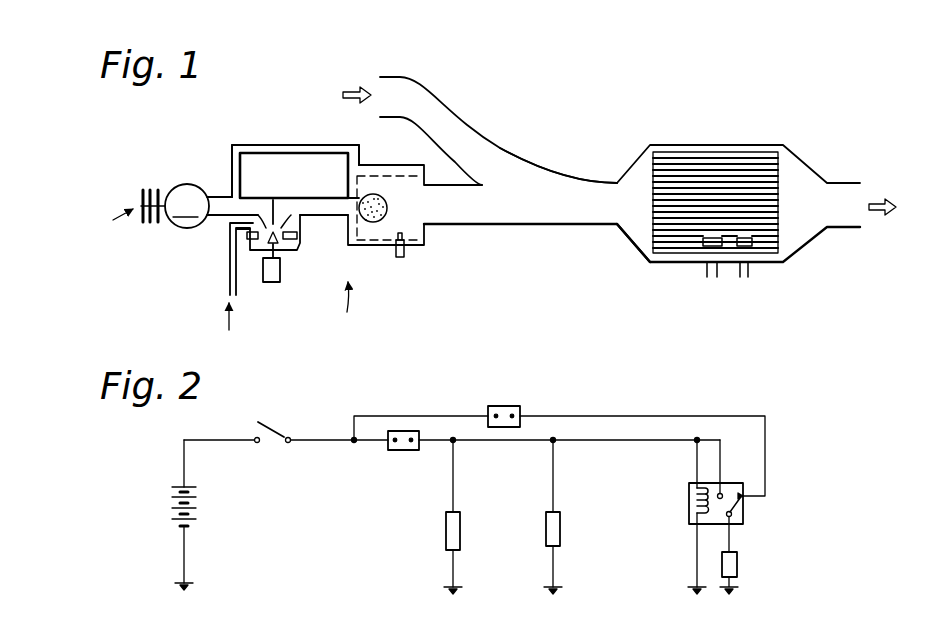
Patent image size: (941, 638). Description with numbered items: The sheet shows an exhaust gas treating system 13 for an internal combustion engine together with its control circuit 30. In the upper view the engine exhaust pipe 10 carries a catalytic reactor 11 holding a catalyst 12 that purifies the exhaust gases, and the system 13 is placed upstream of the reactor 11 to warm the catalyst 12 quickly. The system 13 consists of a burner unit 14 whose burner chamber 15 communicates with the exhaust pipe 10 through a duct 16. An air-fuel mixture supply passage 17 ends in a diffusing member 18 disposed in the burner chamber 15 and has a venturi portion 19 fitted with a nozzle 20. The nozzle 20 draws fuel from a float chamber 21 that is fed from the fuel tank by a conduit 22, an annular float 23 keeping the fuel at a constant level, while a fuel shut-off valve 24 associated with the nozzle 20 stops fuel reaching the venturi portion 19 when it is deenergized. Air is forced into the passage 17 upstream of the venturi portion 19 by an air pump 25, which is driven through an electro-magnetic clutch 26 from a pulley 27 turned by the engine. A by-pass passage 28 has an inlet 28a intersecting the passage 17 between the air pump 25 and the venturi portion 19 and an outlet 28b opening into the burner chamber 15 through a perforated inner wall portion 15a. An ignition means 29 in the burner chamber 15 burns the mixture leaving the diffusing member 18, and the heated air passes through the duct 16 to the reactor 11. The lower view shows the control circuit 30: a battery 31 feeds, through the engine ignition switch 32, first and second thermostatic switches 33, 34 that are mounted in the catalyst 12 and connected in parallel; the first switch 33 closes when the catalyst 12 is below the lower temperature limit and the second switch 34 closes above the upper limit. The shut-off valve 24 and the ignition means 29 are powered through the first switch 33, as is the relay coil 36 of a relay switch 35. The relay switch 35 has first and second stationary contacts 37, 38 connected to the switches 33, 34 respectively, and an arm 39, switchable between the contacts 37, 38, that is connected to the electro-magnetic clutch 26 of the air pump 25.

In FIG. 1, the exhaust pipe 10 is at (437, 110).
In FIG. 1, the catalytic reactor 11 is at (685, 142).
In FIG. 1, the catalyst 12 is at (750, 158).
In FIG. 1, the exhaust gas treating system 13 is at (528, 150).
In FIG. 1, the burner unit 14 is at (355, 338).
In FIG. 1, the burner chamber 15 is at (427, 240).
In FIG. 1, the perforated inner wall portion 15a is at (366, 247).
In FIG. 1, the duct 16 is at (451, 179).
In FIG. 1, the air-fuel mixture supply passage 17 is at (327, 199).
In FIG. 1, the diffusing member 18 is at (390, 204).
In FIG. 1, the venturi portion 19 is at (275, 198).
In FIG. 1, the nozzle 20 is at (298, 226).
In FIG. 1, the float chamber 21 is at (298, 251).
In FIG. 1, the conduit 22 is at (227, 268).
In FIG. 1, the annular float 23 is at (253, 244).
In FIG. 1, the fuel shut-off valve 24 is at (276, 283).
In FIG. 2, the fuel shut-off valve 24 is at (445, 530).
In FIG. 1, the air pump 25 is at (187, 206).
In FIG. 1, the electro-magnetic clutch 26 is at (160, 223).
In FIG. 2, the electro-magnetic clutch 26 is at (738, 570).
In FIG. 1, the pulley 27 is at (108, 223).
In FIG. 1, the by-pass passage 28 is at (300, 144).
In FIG. 1, the inlet 28a is at (234, 196).
In FIG. 1, the outlet 28b is at (355, 162).
In FIG. 1, the ignition means 29 is at (405, 260).
In FIG. 2, the ignition means 29 is at (546, 530).
In FIG. 2, the control circuit 30 is at (584, 410).
In FIG. 2, the battery 31 is at (163, 503).
In FIG. 2, the ignition switch 32 is at (272, 424).
In FIG. 1, the first thermostatic switch 33 is at (703, 247).
In FIG. 2, the first thermostatic switch 33 is at (390, 452).
In FIG. 1, the second thermostatic switch 34 is at (757, 246).
In FIG. 2, the second thermostatic switch 34 is at (510, 404).
In FIG. 2, the relay switch 35 is at (749, 512).
In FIG. 2, the relay coil 36 is at (688, 497).
In FIG. 2, the first stationary contact 37 is at (723, 492).
In FIG. 2, the second stationary contact 38 is at (744, 492).
In FIG. 2, the arm 39 is at (740, 523).